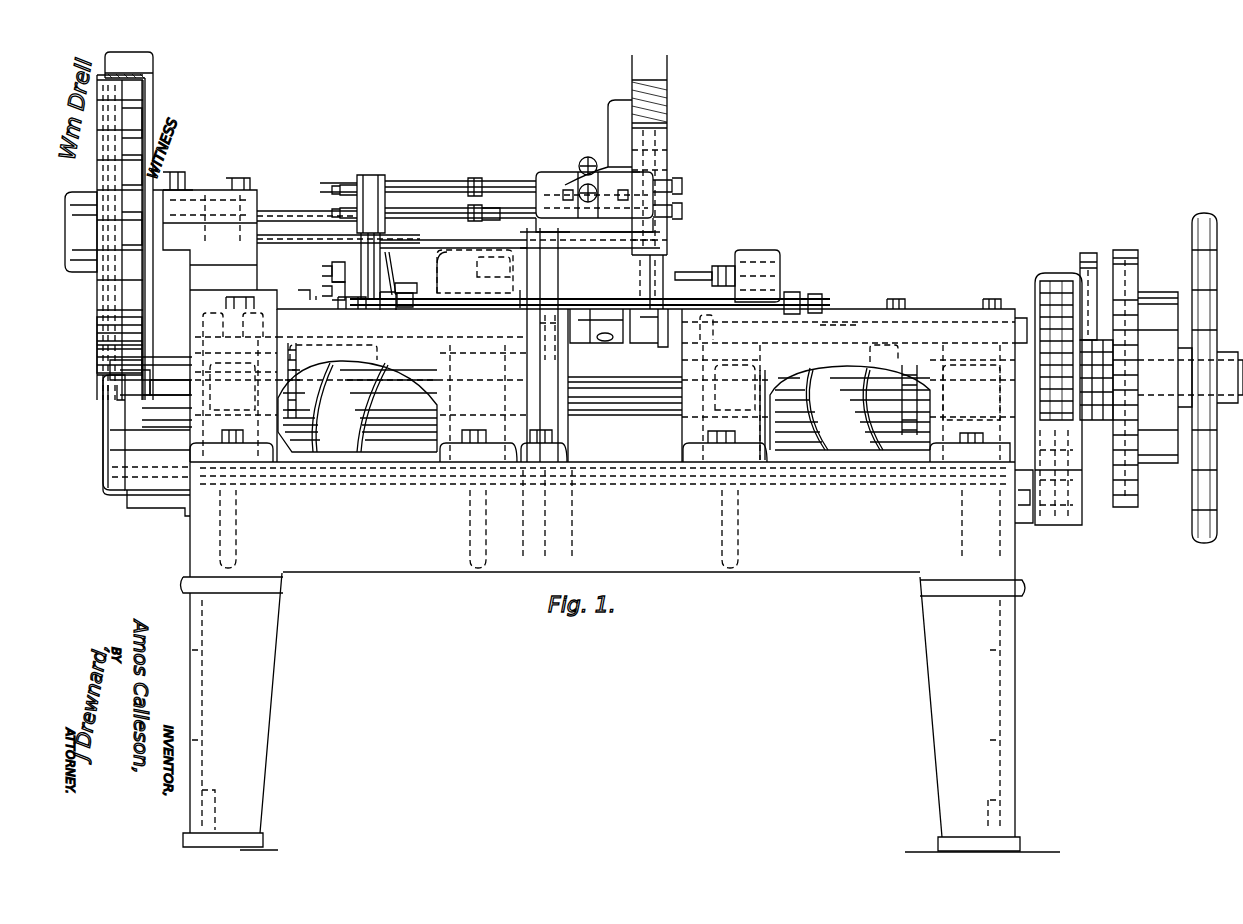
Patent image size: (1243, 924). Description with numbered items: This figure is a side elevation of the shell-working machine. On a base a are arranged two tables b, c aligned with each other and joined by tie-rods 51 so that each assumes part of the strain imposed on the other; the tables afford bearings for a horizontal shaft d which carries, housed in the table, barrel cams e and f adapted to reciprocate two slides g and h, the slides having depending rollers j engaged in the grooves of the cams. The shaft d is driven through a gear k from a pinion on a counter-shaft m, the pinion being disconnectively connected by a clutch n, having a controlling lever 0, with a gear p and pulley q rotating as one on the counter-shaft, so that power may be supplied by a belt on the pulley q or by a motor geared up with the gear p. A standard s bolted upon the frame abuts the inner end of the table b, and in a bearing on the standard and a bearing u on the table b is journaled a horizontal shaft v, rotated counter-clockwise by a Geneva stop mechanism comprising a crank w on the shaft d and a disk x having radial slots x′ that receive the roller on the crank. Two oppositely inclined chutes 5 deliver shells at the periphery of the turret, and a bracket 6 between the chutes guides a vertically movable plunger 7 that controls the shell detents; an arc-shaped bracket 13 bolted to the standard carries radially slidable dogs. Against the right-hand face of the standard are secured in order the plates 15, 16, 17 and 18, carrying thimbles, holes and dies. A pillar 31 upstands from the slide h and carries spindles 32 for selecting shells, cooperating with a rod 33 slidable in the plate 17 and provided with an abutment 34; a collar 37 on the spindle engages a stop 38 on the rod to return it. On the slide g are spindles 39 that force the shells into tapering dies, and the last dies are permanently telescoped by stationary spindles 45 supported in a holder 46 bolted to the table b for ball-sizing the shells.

The base a is at (781, 562).
The table b is at (458, 455).
The table c is at (752, 450).
The horizontal shaft d is at (625, 411).
The barrel cam e is at (852, 452).
The barrel cam f is at (378, 450).
The slide g is at (845, 312).
The slide h is at (438, 280).
The depending roller j is at (825, 348).
The gear k is at (1042, 305).
The bearing 0 is at (1088, 262).
The clutch n is at (1102, 405).
The gear p is at (1125, 500).
The pulley q is at (1165, 462).
The counter-shaft m is at (1215, 352).
The bearing u is at (252, 220).
The horizontal shaft v is at (312, 215).
The crank w is at (118, 400).
The disk x is at (110, 330).
The radial slot x′ is at (160, 170).
The chute 5 is at (668, 103).
The bracket 6 is at (578, 165).
The plunger 7 is at (430, 178).
The arc-shaped bracket 13 is at (655, 292).
The plate 15 is at (570, 345).
The plate 16 is at (585, 340).
The plate 17 is at (618, 335).
The plate 18 is at (628, 328).
The pillar 31 is at (338, 264).
The spindle 32 is at (436, 188).
The rod 33 is at (502, 185).
The abutment 34 is at (672, 188).
The collar 37 is at (482, 215).
The stop 38 is at (476, 186).
The spindle 39 is at (690, 280).
The spindle 45 is at (395, 262).
The holder 46 is at (340, 288).
The tie-rod 51 is at (518, 310).
The standard S is at (562, 365).